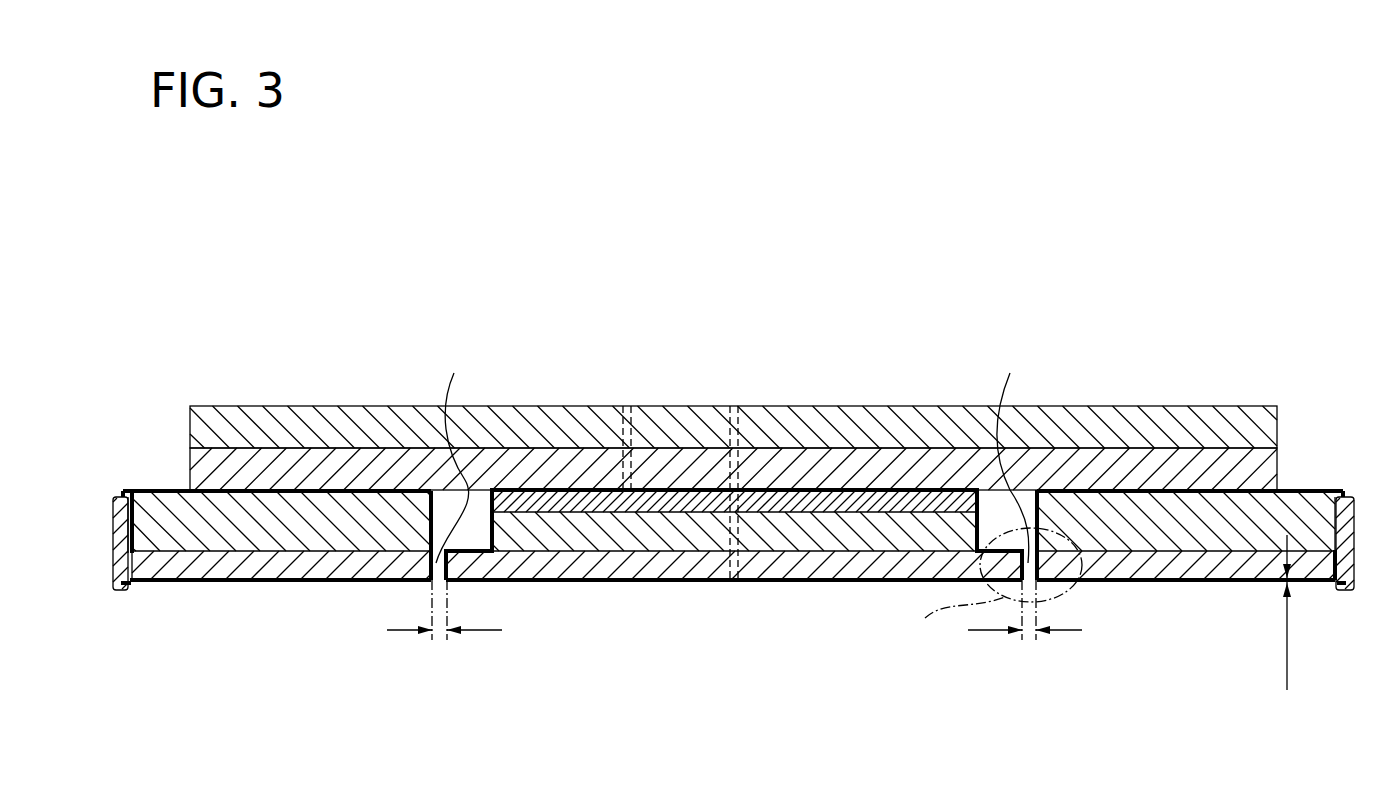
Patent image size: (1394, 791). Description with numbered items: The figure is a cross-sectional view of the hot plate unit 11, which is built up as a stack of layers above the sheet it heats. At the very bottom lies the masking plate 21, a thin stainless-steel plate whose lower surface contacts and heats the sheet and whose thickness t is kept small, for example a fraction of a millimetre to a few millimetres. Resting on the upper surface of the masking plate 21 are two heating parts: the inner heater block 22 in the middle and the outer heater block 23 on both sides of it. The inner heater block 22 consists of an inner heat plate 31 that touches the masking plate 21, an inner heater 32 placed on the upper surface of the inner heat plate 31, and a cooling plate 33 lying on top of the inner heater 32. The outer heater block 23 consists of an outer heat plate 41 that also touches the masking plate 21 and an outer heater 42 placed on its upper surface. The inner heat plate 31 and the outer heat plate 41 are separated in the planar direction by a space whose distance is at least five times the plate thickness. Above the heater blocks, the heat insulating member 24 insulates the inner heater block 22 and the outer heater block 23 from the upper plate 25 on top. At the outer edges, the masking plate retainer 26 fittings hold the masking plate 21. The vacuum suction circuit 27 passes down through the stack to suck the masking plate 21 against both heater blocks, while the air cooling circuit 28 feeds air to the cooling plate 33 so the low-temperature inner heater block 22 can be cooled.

The hot plate unit 11 is at (882, 283).
The masking plate 21 is at (1311, 585).
The inner heater block 22 is at (775, 667).
The outer heater block 23 is at (315, 667).
The heat insulating member 24 is at (1262, 465).
The upper plate 25 is at (1264, 417).
The masking plate retainer 26 is at (117, 519).
The vacuum suction circuit 27 is at (740, 432).
The air cooling circuit 28 is at (632, 432).
The inner heat plate 31 is at (633, 566).
The inner heater 32 is at (690, 540).
The cooling plate 33 is at (760, 505).
The outer heat plate 41 is at (228, 565).
The outer heater 42 is at (295, 540).